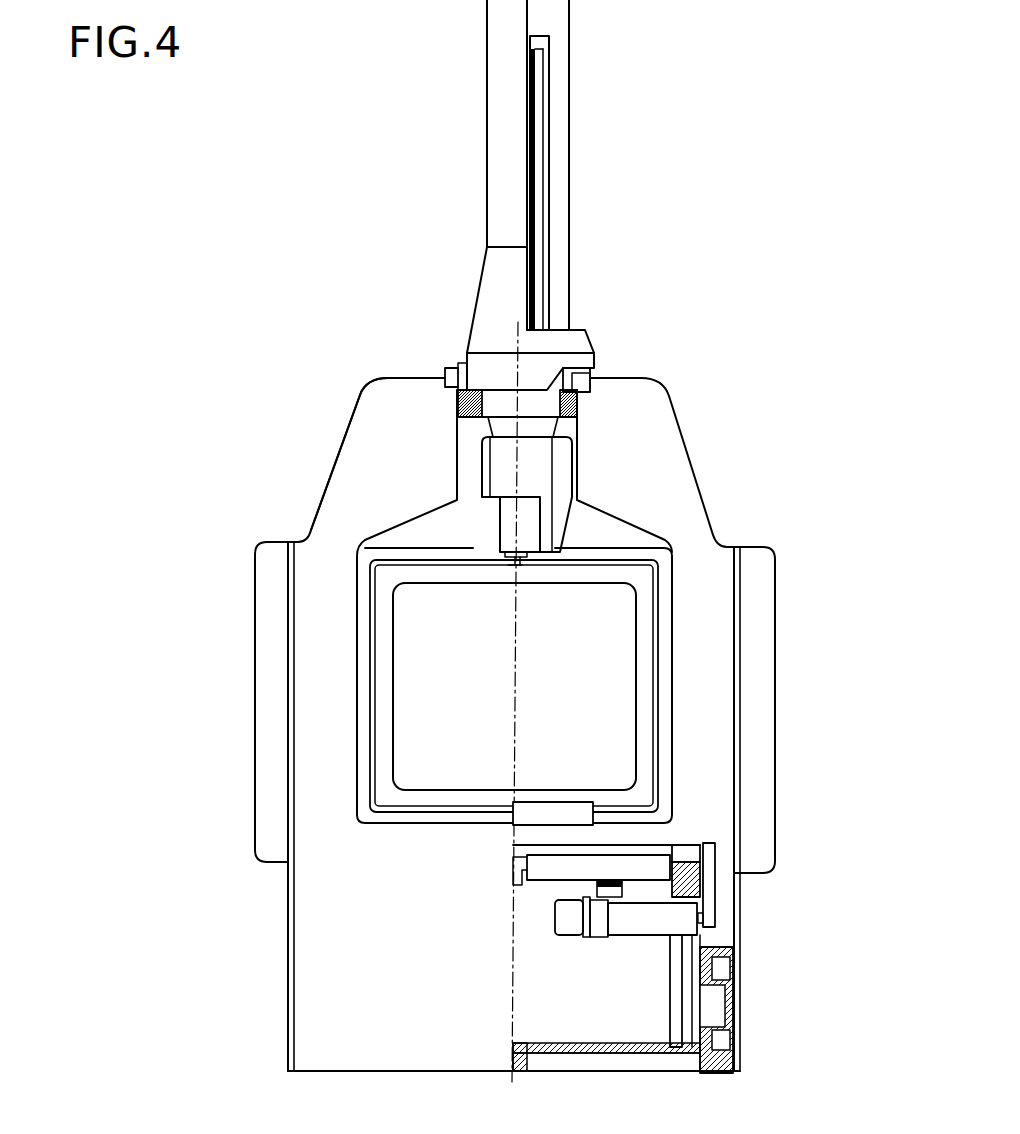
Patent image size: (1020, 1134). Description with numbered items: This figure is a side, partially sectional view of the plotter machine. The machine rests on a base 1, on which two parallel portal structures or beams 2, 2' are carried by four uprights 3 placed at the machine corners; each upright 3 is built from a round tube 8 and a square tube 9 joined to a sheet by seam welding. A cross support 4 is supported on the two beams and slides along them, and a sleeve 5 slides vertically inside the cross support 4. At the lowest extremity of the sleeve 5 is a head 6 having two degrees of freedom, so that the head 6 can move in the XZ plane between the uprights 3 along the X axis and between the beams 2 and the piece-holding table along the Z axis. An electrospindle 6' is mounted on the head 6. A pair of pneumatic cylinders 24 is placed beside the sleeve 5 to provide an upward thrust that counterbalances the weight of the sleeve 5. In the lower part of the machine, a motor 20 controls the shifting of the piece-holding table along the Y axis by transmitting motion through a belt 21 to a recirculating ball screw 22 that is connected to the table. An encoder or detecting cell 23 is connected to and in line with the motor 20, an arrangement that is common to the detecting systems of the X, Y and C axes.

The base 1 is at (160, 917).
The beam 2 is at (563, 724).
The beam 2' is at (280, 454).
The upright 3 is at (307, 635).
The cross support 4 is at (490, 318).
The sleeve 5 is at (506, 76).
The head 6 is at (546, 471).
The electrospindle 6' is at (472, 592).
The round tube 8 is at (460, 365).
The square tube 9 is at (592, 373).
The motor 20 is at (652, 918).
The belt 21 is at (716, 887).
The recirculating ball screw 22 is at (513, 857).
The encoder 23 is at (560, 918).
The pneumatic cylinder 24 is at (538, 135).